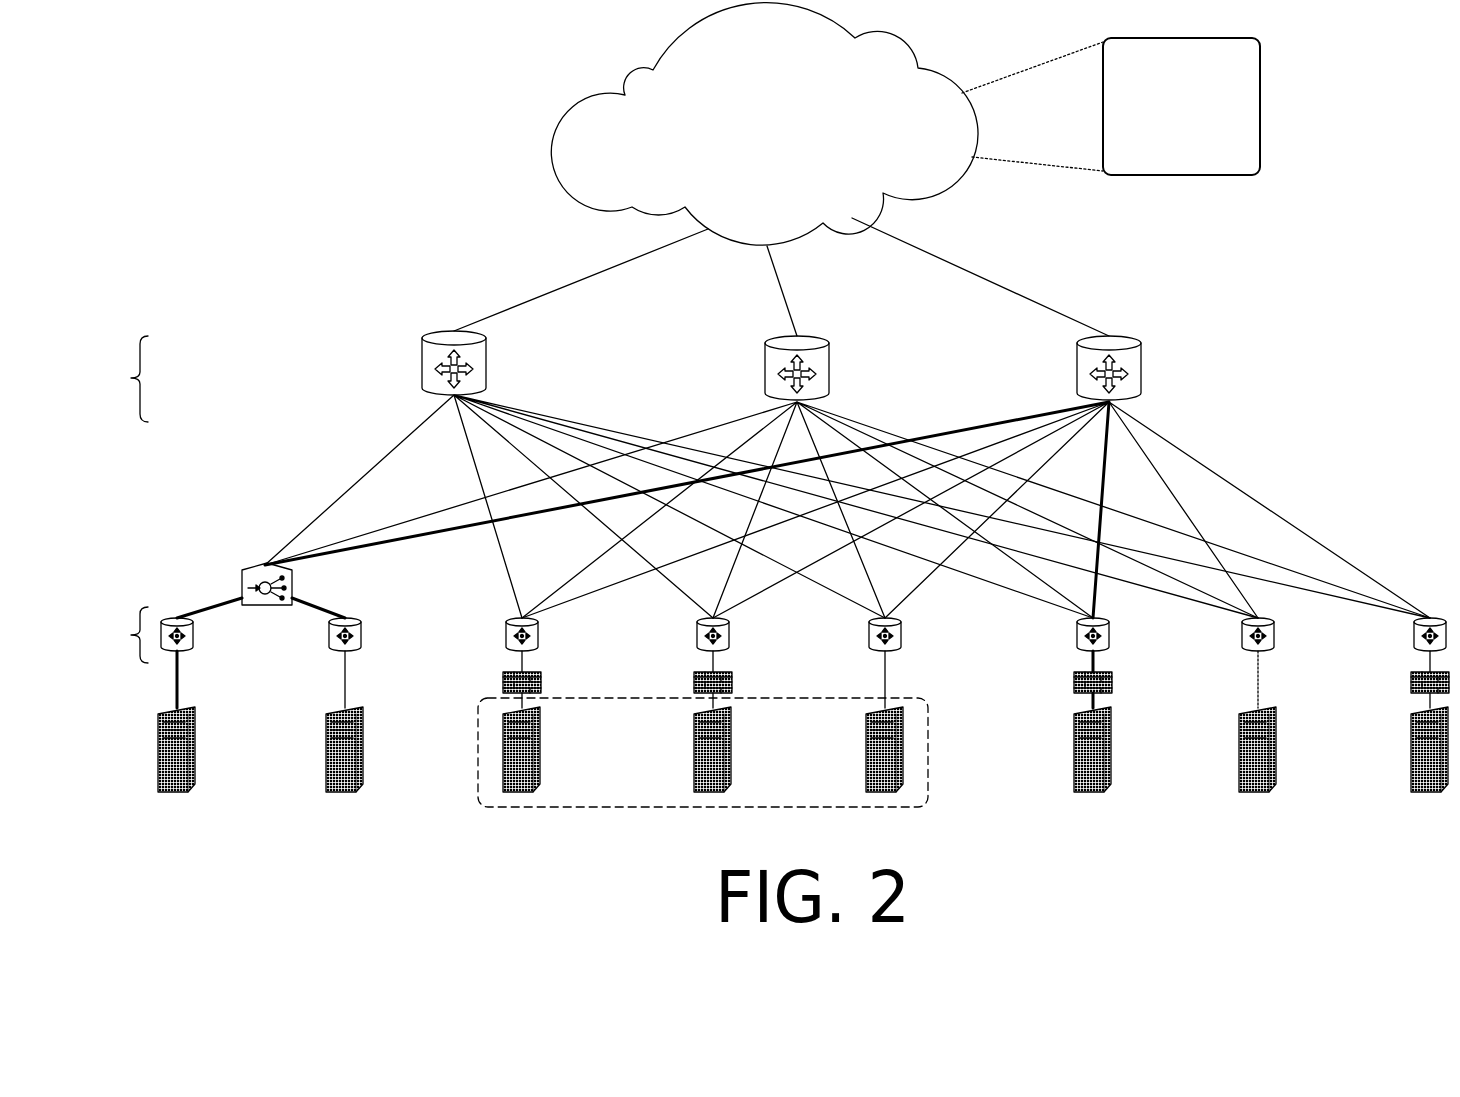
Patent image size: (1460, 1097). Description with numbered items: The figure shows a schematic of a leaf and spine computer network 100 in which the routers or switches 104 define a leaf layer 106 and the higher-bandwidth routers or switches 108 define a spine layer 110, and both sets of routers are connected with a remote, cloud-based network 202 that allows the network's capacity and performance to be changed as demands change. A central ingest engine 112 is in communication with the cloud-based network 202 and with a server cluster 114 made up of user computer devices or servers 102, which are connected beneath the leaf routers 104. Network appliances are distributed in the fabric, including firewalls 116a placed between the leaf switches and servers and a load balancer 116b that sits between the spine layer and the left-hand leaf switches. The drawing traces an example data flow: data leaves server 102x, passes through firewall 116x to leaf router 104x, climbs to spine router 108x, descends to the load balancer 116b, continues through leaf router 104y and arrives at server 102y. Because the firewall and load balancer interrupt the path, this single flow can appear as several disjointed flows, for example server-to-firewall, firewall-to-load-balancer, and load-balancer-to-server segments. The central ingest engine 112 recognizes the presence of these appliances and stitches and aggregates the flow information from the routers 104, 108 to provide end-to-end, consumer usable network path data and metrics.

The computer network 100 is at (368, 293).
The user computer devices 102 is at (340, 793).
The server 102x is at (1092, 793).
The server 102y is at (176, 793).
The routers or switches 104 is at (328, 634).
The leaf router 104x is at (1078, 636).
The leaf router 104y is at (190, 650).
The leaf layer 106 is at (148, 610).
The routers or switches 108 is at (488, 352).
The spine router 108x is at (1143, 355).
The spine layer 110 is at (148, 337).
The central ingest engine 112 is at (1164, 159).
The server cluster 114 is at (602, 789).
The firewalls 116a is at (503, 683).
The load balancer 116b is at (257, 569).
The firewall 116x is at (1075, 683).
The cloud-based network 202 is at (790, 137).